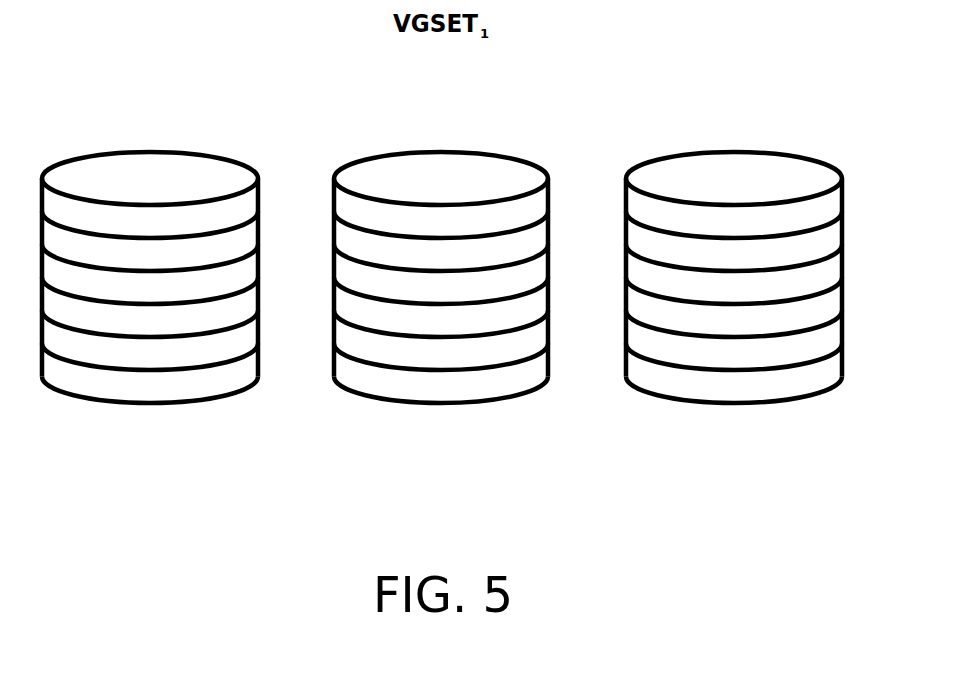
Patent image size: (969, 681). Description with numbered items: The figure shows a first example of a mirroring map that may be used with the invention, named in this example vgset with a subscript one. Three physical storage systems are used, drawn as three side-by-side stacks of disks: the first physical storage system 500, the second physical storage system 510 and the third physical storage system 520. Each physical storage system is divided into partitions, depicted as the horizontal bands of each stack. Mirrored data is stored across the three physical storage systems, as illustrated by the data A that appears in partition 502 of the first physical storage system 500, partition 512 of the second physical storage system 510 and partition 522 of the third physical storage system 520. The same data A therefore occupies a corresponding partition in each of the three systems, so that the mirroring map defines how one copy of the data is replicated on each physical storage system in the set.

The PSS-1 500 is at (227, 170).
The partition 502 is at (248, 243).
The PSS-2 510 is at (520, 164).
The partition 512 is at (543, 237).
The PSS-3 520 is at (810, 169).
The partition 522 is at (835, 237).